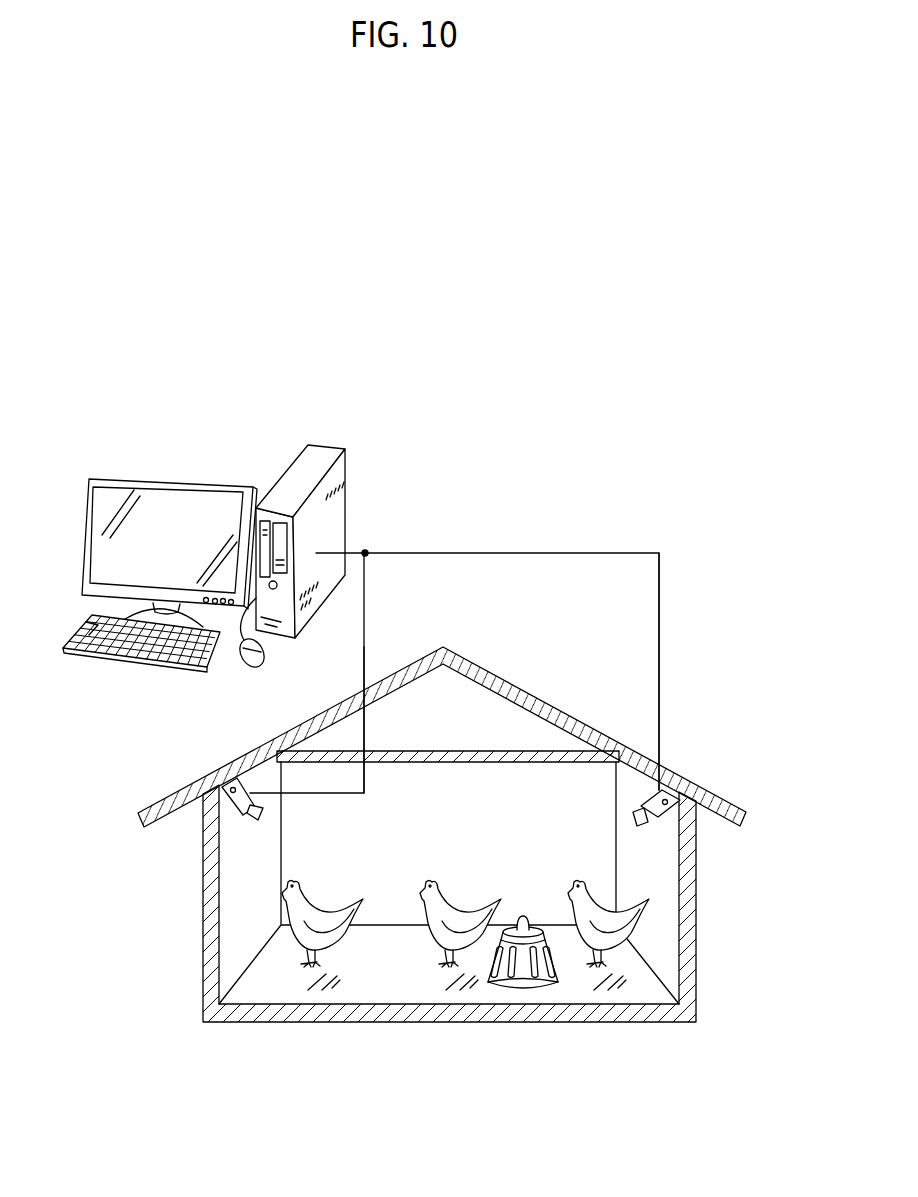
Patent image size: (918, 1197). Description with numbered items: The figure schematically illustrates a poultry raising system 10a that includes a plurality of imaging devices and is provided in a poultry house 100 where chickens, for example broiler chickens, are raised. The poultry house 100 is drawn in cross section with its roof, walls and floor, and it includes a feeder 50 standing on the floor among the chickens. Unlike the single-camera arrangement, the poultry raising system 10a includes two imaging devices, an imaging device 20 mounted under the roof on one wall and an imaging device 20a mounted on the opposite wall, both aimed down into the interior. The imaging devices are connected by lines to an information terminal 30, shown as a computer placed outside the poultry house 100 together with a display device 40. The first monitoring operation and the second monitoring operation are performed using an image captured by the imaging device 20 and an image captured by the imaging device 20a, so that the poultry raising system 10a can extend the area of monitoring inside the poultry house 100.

The poultry raising system 10a is at (776, 457).
The imaging device 20 is at (697, 830).
The imaging device 20a is at (236, 801).
The information terminal 30 is at (323, 452).
The display device 40 is at (85, 503).
The feeder 50 is at (540, 988).
The poultry house 100 is at (717, 795).